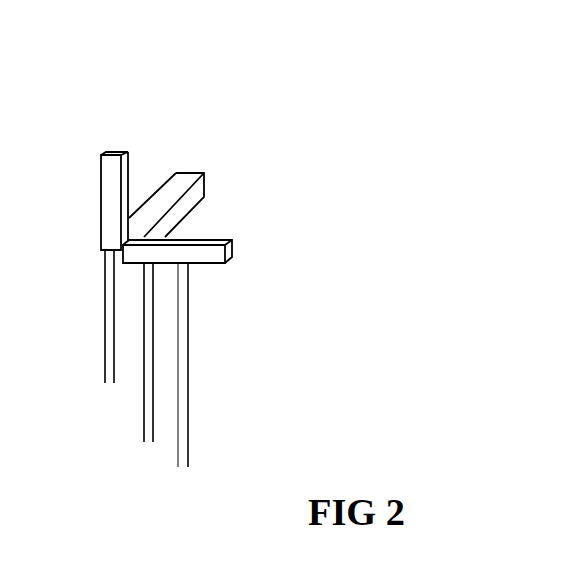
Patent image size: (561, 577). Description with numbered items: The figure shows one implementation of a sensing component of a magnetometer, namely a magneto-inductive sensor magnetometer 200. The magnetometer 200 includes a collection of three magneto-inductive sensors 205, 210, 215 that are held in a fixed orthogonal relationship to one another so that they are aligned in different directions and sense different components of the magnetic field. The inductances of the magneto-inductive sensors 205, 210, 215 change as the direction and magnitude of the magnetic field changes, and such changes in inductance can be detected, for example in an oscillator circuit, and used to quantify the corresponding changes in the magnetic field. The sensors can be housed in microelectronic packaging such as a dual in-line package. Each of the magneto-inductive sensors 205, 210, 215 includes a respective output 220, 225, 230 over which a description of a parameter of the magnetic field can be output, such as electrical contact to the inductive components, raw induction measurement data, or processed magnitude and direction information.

The magneto-inductive sensor magnetometer 200 is at (229, 262).
The magneto-inductive sensor 205 is at (130, 159).
The magneto-inductive sensor 210 is at (182, 183).
The magneto-inductive sensor 215 is at (183, 238).
The output 220 is at (106, 312).
The output 225 is at (153, 410).
The output 230 is at (188, 353).